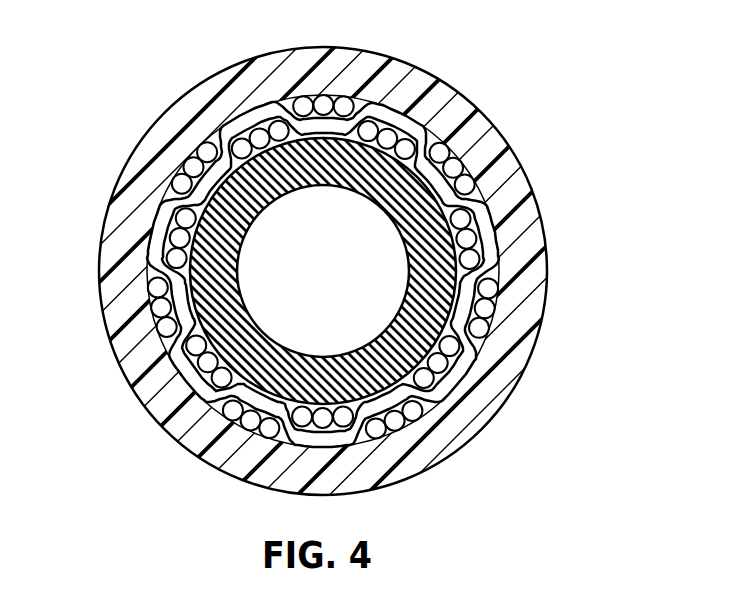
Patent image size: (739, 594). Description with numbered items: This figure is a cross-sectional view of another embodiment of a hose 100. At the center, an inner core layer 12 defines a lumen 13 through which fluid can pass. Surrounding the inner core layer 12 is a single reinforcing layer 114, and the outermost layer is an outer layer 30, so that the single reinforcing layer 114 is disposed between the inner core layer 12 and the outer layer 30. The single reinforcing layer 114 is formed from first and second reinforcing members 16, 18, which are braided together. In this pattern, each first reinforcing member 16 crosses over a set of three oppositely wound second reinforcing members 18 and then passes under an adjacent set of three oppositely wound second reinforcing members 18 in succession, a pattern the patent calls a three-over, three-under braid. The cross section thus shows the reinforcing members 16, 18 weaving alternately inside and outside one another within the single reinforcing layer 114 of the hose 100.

The hose 100 is at (122, 84).
The outer layer 30 is at (428, 71).
The first reinforcing members 16 is at (460, 185).
The second reinforcing members 18 is at (483, 227).
The inner core layer 12 is at (200, 290).
The lumen 13 is at (353, 264).
The single reinforcing layer 114 is at (173, 357).